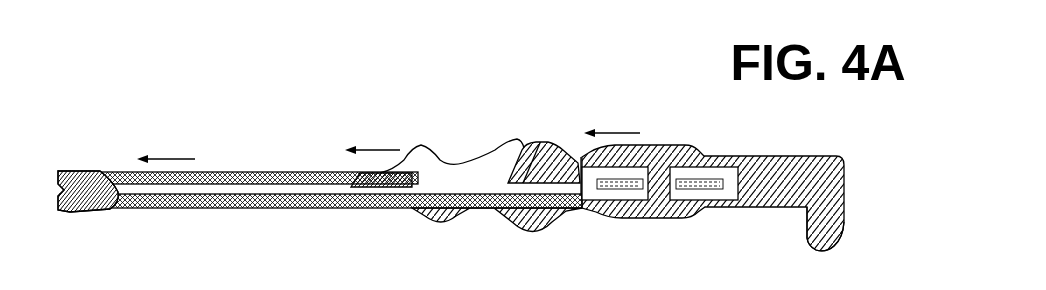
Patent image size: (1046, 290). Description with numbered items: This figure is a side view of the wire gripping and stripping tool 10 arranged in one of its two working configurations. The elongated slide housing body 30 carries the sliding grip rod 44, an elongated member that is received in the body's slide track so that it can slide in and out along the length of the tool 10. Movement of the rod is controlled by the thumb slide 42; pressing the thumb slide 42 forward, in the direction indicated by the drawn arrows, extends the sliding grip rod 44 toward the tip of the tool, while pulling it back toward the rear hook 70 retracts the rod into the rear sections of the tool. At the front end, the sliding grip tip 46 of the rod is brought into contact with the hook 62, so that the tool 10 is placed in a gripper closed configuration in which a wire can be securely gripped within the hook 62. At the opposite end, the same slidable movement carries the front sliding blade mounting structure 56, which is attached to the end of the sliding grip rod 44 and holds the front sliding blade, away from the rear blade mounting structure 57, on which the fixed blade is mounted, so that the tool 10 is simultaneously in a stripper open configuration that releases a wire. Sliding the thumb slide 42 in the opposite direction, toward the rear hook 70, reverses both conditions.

The wire gripping and stripping tool 10 is at (520, 87).
The slide housing body 30 is at (262, 165).
The thumb slide 42 is at (461, 146).
The sliding grip rod 44 is at (288, 196).
The sliding grip tip 46 is at (148, 196).
The front sliding blade mounting structure 56 is at (613, 201).
The rear blade mounting structure 57 is at (713, 208).
The hook 62 is at (100, 181).
The rear hook 70 is at (852, 258).